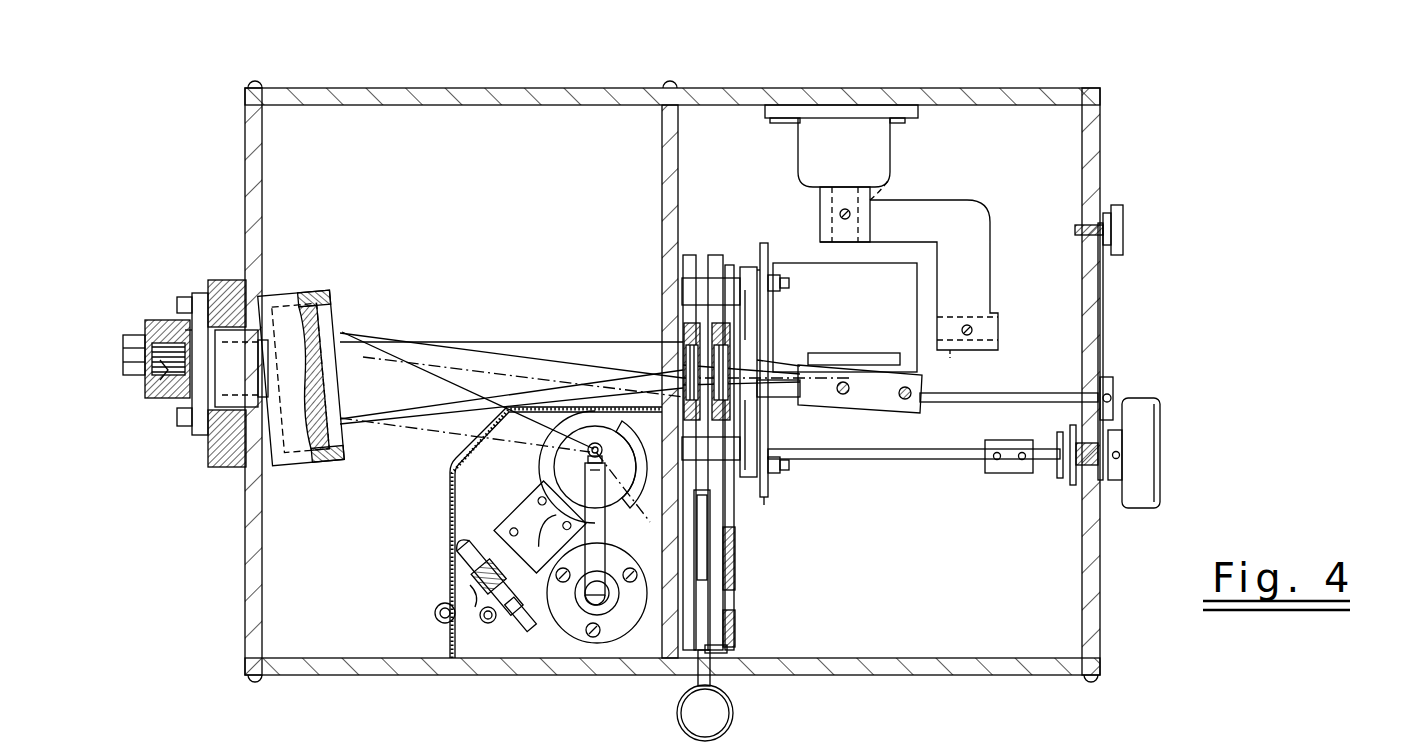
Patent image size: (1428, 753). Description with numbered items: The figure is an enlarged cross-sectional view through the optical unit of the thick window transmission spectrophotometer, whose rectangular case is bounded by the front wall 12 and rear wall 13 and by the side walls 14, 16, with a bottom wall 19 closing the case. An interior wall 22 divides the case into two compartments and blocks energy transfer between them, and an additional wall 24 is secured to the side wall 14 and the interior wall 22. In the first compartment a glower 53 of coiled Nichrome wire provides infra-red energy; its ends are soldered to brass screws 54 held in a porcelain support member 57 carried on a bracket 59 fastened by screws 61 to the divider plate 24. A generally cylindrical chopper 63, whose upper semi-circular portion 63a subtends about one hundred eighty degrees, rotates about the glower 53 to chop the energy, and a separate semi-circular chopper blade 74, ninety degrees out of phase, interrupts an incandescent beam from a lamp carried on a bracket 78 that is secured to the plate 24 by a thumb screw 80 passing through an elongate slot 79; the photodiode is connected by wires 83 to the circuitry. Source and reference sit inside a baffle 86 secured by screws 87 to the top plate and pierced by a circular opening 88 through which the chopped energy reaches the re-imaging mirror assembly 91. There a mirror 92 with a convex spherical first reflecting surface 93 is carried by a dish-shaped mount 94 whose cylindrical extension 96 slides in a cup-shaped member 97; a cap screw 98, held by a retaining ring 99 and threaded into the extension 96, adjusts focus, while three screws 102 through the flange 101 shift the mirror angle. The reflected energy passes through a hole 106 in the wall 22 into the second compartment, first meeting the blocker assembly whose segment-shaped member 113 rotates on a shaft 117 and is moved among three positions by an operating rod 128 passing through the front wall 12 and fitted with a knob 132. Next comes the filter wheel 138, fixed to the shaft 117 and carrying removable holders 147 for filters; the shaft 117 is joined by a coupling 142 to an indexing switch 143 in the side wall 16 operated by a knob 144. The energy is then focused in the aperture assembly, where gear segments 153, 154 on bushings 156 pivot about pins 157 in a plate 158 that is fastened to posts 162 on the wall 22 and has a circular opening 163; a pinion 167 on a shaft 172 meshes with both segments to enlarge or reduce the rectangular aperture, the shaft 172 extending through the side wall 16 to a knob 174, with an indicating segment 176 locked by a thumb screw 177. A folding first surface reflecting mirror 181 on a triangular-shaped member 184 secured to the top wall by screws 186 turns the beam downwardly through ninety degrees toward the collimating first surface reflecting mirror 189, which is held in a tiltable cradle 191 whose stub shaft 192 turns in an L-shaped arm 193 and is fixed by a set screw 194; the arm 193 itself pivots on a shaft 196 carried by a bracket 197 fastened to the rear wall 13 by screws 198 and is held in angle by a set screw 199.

The front wall 12 is at (970, 668).
The rear wall 13 is at (614, 88).
The side wall 14 is at (245, 160).
The side wall 16 is at (1100, 144).
The bottom wall 19 is at (882, 548).
The interior wall 22 is at (662, 160).
The additional wall 24 is at (490, 386).
The glower 53 is at (582, 436).
The brass screws 54 is at (604, 450).
The porcelain support member 57 is at (588, 468).
The bracket 59 is at (566, 616).
The screws 61 is at (562, 578).
The chopper 63 is at (546, 462).
The upper semi-circular portion 63a is at (616, 514).
The semi-circular chopper blade 74 is at (576, 418).
The bracket 78 is at (525, 513).
The elongate slot 79 is at (470, 608).
The thumb screw 80 is at (434, 610).
The wires 83 is at (540, 527).
The baffle 86 is at (448, 494).
The screws 87 is at (641, 415).
The circular opening 88 is at (453, 455).
The re-imaging mirror assembly 91 is at (245, 339).
The mirror 92 is at (318, 460).
The convex spherical first reflecting surface 93 is at (326, 378).
The mount 94 is at (294, 240).
The cylindrical extension 96 is at (173, 320).
The cup-shaped member 97 is at (178, 402).
The cap screw 98 is at (133, 335).
The retaining ring 99 is at (163, 393).
The flange 101 is at (202, 438).
The screws 102 is at (195, 295).
The hole 106 is at (661, 353).
The segment-shaped member 113 is at (690, 646).
The shaft 117 is at (937, 458).
The operating rod 128 is at (710, 679).
The knob 132 is at (684, 715).
The filter wheel 138 is at (727, 651).
The coupling 142 is at (1012, 473).
The indexing switch 143 is at (1074, 492).
The knob 144 is at (1148, 511).
The holders 147 is at (735, 572).
The gear segment 153 is at (764, 503).
The gear segment 154 is at (760, 244).
The bushings 156 is at (766, 273).
The pins 157 is at (789, 283).
The plate 158 is at (746, 267).
The posts 162 is at (711, 369).
The circular opening 163 is at (762, 362).
The pinion 167 is at (770, 426).
The shaft 172 is at (998, 392).
The knob 174 is at (1113, 389).
The segment 176 is at (1102, 295).
The thumb screw 177 is at (1115, 237).
The first surface reflecting mirror 181 is at (854, 354).
The triangular-shaped member 184 is at (874, 412).
The screws 186 is at (846, 384).
The first surface reflecting mirror 189 is at (845, 317).
The cradle 191 is at (970, 292).
The stub shaft 192 is at (952, 362).
The L-shaped arm 193 is at (990, 246).
The set screw 194 is at (974, 328).
The shaft 196 is at (890, 182).
The bracket 197 is at (868, 166).
The screws 198 is at (776, 123).
The set screw 199 is at (840, 214).